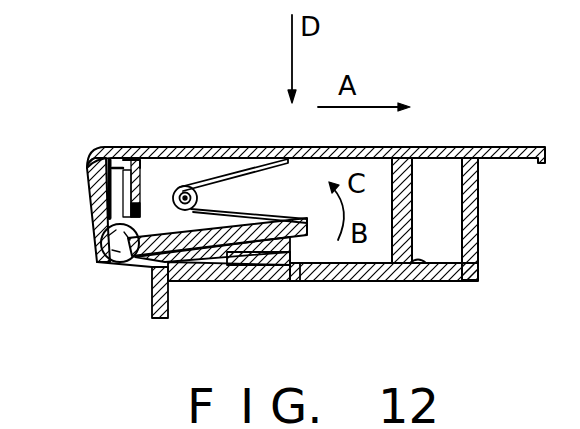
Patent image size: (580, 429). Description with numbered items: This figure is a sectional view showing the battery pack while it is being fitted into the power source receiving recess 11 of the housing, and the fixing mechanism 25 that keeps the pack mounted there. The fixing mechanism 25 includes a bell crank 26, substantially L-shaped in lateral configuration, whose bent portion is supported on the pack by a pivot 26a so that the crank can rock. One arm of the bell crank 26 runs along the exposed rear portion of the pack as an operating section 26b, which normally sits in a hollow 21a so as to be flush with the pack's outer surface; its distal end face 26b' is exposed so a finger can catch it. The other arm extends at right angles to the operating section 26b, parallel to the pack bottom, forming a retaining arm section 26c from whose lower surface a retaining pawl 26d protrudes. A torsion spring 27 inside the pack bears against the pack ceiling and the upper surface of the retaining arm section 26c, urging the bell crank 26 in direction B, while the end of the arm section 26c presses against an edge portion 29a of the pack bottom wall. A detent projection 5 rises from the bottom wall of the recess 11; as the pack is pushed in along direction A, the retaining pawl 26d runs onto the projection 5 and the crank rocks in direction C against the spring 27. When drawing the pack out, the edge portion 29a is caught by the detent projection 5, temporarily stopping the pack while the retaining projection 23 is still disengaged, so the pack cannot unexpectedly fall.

The power source receiving recess 11 is at (443, 238).
The bell crank 26 is at (100, 242).
The operating section 26b is at (68, 189).
The distal end face 26b' is at (117, 129).
The hollow 21a is at (122, 199).
The fixing mechanism 25 is at (221, 194).
The torsion spring 27 is at (236, 222).
The detent projection 5 is at (278, 292).
The retaining pawl 26d is at (276, 268).
The retaining arm section 26c is at (187, 282).
The pivot 26a is at (120, 268).
The edge portion 29a is at (308, 268).
The retaining projection 23 is at (415, 275).